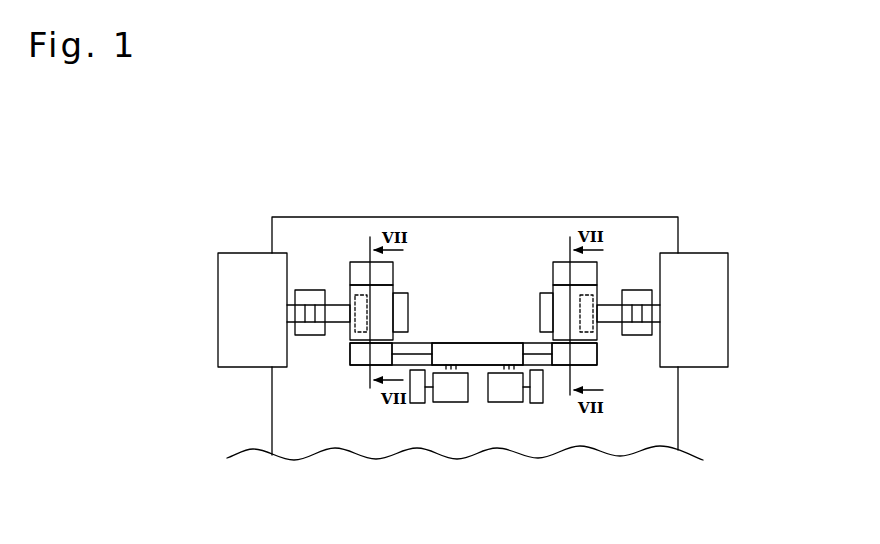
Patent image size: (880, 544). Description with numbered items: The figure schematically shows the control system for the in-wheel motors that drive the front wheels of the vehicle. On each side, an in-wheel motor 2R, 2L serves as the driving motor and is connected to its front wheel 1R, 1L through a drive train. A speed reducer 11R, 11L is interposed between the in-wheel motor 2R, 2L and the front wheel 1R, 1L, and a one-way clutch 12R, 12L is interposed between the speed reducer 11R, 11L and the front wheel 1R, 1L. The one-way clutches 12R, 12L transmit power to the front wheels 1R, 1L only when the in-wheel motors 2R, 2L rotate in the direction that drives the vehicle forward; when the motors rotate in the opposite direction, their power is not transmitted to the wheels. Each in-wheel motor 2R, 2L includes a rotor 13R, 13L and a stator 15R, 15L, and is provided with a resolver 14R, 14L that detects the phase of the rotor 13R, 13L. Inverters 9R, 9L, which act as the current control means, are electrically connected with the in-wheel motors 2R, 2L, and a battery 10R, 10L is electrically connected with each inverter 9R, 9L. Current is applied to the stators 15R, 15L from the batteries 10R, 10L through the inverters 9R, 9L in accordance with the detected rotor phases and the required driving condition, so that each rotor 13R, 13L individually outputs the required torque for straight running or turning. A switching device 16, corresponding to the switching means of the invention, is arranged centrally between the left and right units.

The front wheel 1L is at (211, 310).
The front wheel 1R is at (737, 310).
The in-wheel motor 2L is at (337, 396).
The in-wheel motor 2R is at (608, 392).
The inverter 9L is at (451, 438).
The inverter 9R is at (506, 438).
The battery 10L is at (408, 442).
The battery 10R is at (555, 442).
The speed reducer 11L is at (313, 248).
The speed reducer 11R is at (652, 233).
The one-way clutch 12L is at (274, 263).
The one-way clutch 12R is at (669, 253).
The rotor 13L is at (398, 253).
The rotor 13R is at (570, 237).
The resolver 14L is at (439, 234).
The resolver 14R is at (525, 249).
The stator 15L is at (355, 224).
The stator 15R is at (606, 224).
The switching device 16 is at (477, 325).